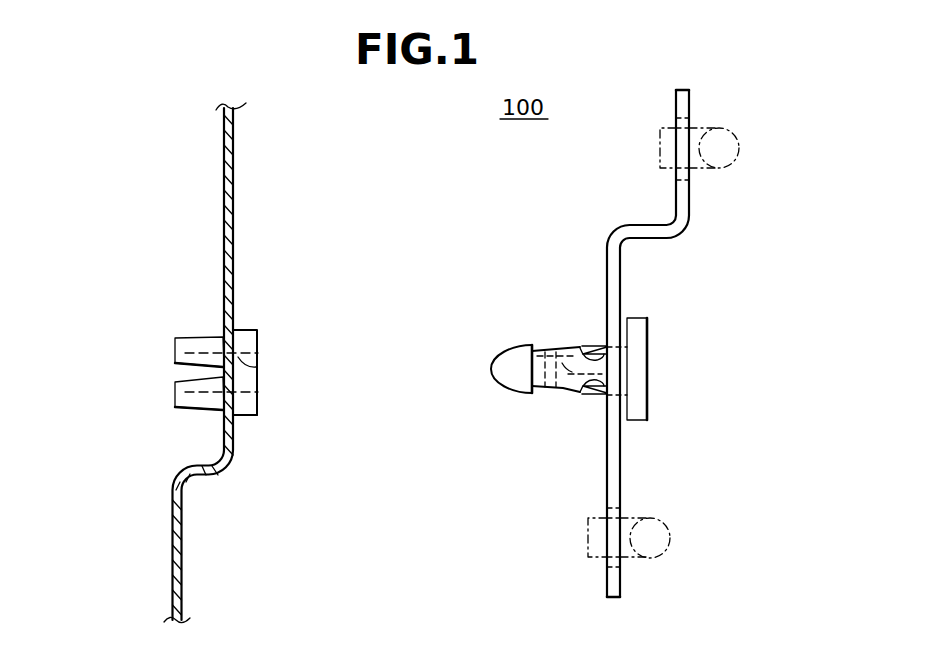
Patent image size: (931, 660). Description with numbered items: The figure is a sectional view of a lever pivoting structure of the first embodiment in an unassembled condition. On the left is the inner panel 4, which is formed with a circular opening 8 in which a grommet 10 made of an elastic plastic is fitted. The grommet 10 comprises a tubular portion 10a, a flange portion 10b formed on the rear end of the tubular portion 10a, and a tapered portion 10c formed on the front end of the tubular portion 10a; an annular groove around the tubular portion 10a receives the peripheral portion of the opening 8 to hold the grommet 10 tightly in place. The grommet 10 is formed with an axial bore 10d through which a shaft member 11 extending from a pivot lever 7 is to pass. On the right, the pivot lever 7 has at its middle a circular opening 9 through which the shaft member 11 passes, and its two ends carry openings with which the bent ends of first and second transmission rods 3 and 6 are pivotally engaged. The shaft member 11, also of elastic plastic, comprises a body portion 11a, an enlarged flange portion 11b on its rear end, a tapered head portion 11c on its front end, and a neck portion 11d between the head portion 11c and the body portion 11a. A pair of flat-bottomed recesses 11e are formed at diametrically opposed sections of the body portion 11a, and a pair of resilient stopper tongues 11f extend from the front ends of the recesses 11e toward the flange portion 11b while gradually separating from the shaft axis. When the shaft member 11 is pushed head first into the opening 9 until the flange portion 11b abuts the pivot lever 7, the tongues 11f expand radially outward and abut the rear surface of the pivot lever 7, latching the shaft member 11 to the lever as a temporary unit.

The first transmission rod 3 is at (656, 547).
The inner panel 4 is at (230, 242).
The second transmission rod 6 is at (725, 141).
The pivot lever 7 is at (680, 231).
The circular opening 8 is at (207, 335).
The circular opening 9 is at (640, 347).
The grommet 10 is at (256, 338).
The tubular portion 10a is at (223, 415).
The flange portion 10b is at (250, 415).
The tapered portion 10c is at (183, 410).
The axial bore 10d is at (260, 367).
The shaft member 11 is at (575, 366).
The body portion 11a is at (557, 380).
The enlarged flange portion 11b is at (643, 410).
The tapered head portion 11c is at (510, 377).
The neck portion 11d is at (540, 348).
The flat-bottomed recess 11e is at (587, 360).
The resilient stopper tongue 11f is at (595, 342).